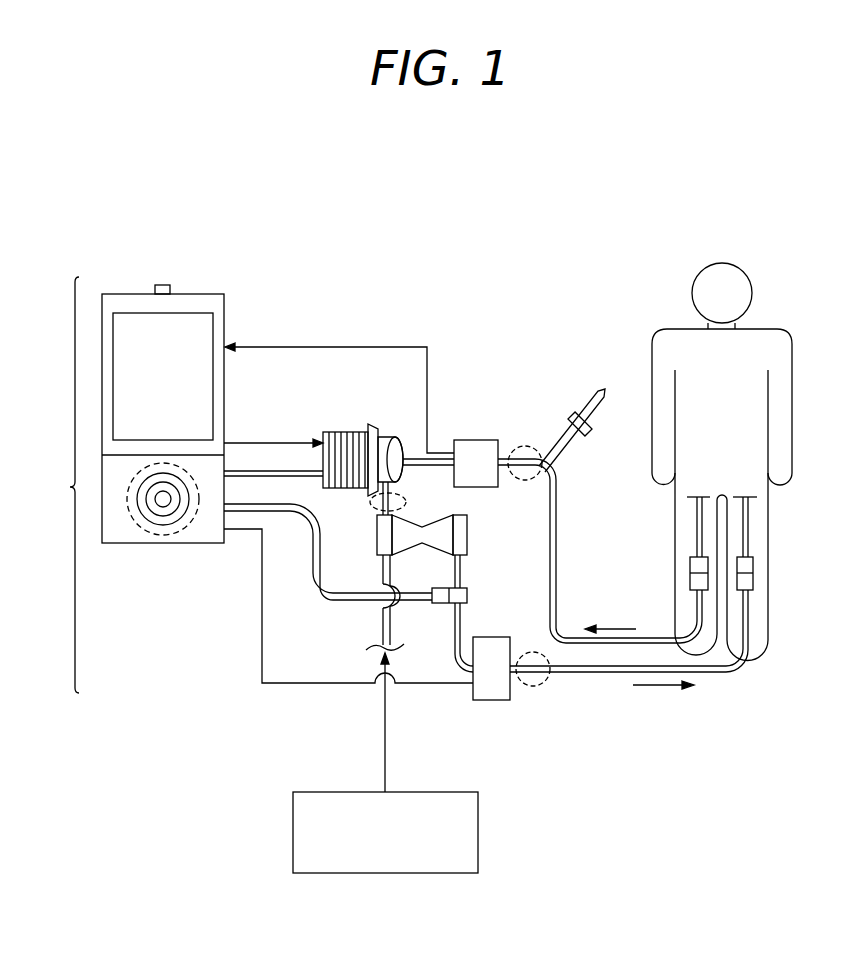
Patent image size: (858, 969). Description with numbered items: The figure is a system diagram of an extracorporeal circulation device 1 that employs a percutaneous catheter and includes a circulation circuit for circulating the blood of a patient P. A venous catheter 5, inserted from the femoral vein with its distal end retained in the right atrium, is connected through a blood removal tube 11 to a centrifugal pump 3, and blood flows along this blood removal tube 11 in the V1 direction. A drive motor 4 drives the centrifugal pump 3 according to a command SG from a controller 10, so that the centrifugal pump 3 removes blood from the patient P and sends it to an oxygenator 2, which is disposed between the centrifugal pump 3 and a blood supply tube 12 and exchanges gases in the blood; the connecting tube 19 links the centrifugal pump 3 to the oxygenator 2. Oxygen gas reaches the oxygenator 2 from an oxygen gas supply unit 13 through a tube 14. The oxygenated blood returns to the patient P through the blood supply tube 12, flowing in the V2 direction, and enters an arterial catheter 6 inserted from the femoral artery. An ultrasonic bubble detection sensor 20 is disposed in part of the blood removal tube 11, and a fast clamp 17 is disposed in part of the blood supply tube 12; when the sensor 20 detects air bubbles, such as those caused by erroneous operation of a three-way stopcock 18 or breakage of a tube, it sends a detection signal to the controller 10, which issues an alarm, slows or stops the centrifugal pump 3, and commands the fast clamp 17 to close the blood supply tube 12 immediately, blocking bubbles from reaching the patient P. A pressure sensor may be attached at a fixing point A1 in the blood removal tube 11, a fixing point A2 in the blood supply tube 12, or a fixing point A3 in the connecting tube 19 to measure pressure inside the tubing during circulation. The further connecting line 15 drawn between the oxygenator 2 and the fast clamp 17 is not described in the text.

The extracorporeal circulation device 1 is at (70, 487).
The controller 10 is at (193, 294).
The command SG is at (265, 441).
The drive motor 4 is at (343, 432).
The centrifugal pump 3 is at (386, 437).
The ultrasonic bubble detection sensor 20 is at (472, 440).
The connecting tube 19 is at (403, 498).
The fixing point A3 is at (372, 508).
The oxygenator 2 is at (468, 534).
The tube 14 is at (382, 632).
The connecting tube 15 is at (348, 588).
The fast clamp 17 is at (495, 702).
The oxygen gas supply unit 13 is at (334, 792).
The blood removal tube 11 is at (549, 596).
The V1 direction V1 is at (610, 615).
The blood supply tube 12 is at (617, 677).
The V2 direction V2 is at (663, 698).
The fixing point A2 is at (547, 688).
The fixing point A1 is at (530, 444).
The three-way stopcock 18 is at (592, 433).
The patient P is at (772, 344).
The venous catheter 5 is at (695, 532).
The arterial catheter 6 is at (750, 532).